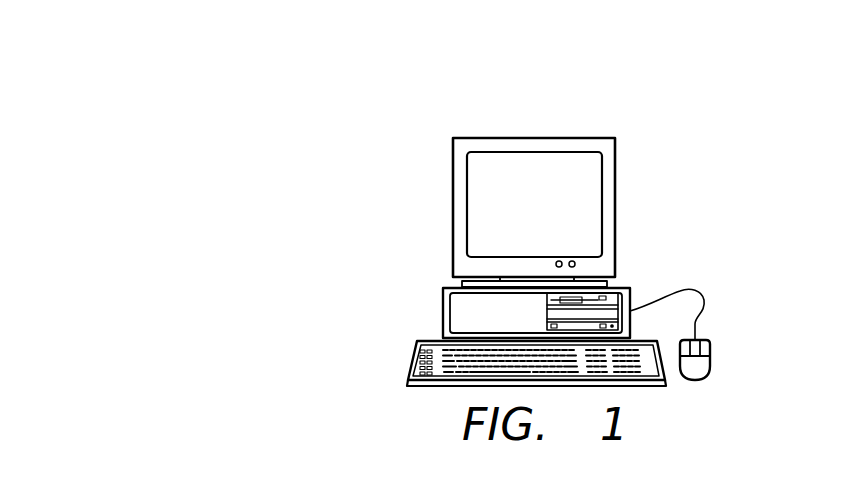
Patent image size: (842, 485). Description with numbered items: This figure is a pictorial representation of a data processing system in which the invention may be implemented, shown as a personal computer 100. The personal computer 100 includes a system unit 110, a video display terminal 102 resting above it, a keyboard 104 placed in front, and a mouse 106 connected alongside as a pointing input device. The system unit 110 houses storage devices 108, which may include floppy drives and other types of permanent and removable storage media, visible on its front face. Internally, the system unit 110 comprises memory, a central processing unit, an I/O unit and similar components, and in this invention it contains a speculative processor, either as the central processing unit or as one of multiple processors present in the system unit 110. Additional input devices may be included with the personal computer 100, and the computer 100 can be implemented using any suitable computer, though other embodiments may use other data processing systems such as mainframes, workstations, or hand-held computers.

The personal computer 100 is at (560, 110).
The video display terminal 102 is at (453, 207).
The keyboard 104 is at (411, 362).
The mouse 106 is at (711, 356).
The storage devices 108 is at (598, 298).
The system unit 110 is at (443, 312).